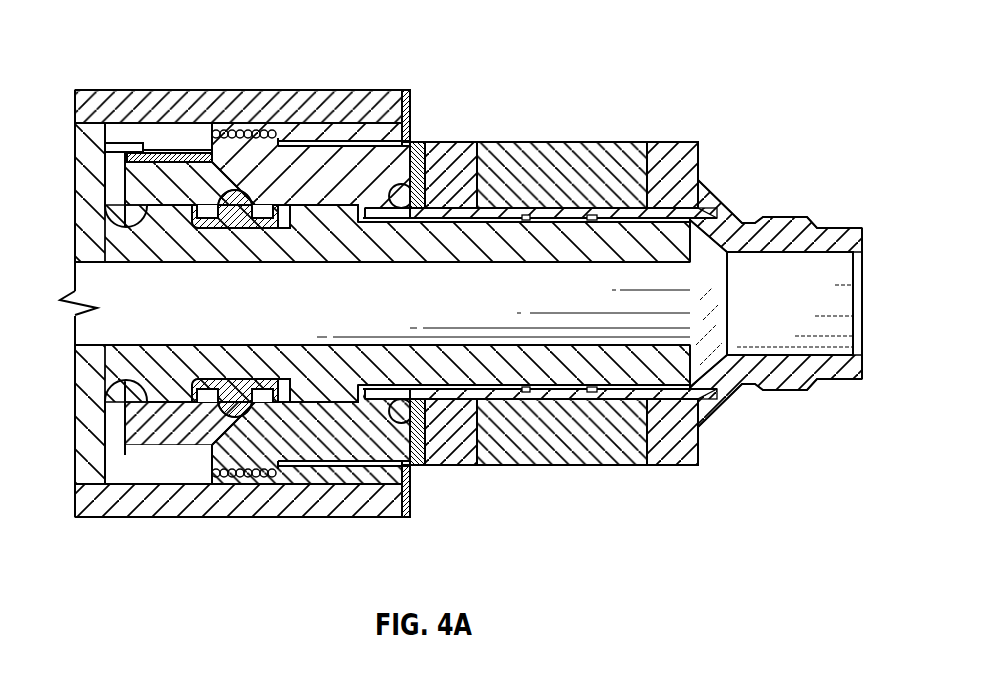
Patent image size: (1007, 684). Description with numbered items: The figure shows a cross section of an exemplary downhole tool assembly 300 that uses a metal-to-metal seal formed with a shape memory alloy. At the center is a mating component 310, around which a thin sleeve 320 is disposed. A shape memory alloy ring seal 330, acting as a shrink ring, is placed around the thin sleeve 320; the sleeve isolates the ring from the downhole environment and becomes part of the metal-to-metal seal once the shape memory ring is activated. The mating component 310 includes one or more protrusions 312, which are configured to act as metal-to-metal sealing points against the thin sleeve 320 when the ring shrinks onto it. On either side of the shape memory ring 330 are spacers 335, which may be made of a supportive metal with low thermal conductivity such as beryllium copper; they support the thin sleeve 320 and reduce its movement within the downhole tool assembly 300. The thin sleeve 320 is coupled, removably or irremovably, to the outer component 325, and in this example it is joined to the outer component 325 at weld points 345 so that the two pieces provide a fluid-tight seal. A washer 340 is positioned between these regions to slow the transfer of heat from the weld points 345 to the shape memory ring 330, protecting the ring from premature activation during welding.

The downhole tool assembly 300 is at (447, 303).
The mating component 310 is at (480, 353).
The protrusions 312 is at (592, 390).
The thin sleeve 320 is at (622, 390).
The outer component 325 is at (345, 88).
The shape memory alloy ring seal 330 is at (562, 162).
The spacers 335 is at (465, 142).
The washer 340 is at (412, 142).
The weld points 345 is at (242, 126).